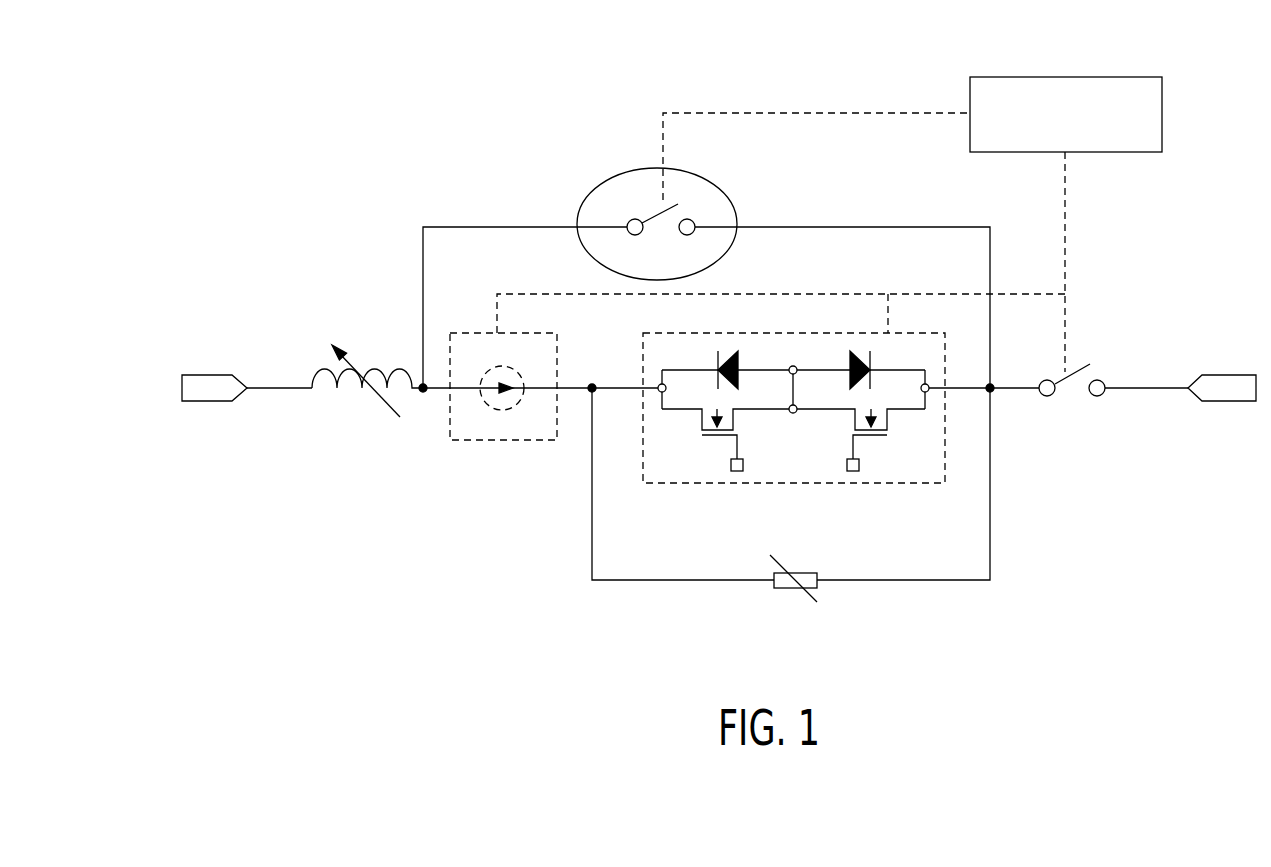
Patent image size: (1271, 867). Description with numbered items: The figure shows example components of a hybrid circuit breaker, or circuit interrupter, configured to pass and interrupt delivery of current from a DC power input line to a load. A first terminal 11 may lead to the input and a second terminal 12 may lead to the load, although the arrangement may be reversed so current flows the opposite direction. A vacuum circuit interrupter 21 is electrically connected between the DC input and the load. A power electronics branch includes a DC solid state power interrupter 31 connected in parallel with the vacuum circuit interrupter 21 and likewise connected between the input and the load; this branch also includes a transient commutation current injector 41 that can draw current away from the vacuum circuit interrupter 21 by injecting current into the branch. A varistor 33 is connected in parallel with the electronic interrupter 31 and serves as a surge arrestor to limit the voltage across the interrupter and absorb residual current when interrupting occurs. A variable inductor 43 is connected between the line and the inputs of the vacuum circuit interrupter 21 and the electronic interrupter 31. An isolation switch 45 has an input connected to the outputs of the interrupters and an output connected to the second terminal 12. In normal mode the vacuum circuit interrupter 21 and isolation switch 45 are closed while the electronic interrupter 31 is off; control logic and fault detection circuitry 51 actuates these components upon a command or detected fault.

The first terminal 11 is at (202, 371).
The second terminal 12 is at (1222, 375).
The vacuum circuit interrupter 21 is at (613, 178).
The DC solid state power interrupter 31 is at (672, 487).
The varistor 33 is at (790, 590).
The transient commutation current injector 41 is at (480, 443).
The variable inductor 43 is at (317, 369).
The isolation switch 45 is at (1068, 400).
The control logic circuitry 51 is at (1162, 106).